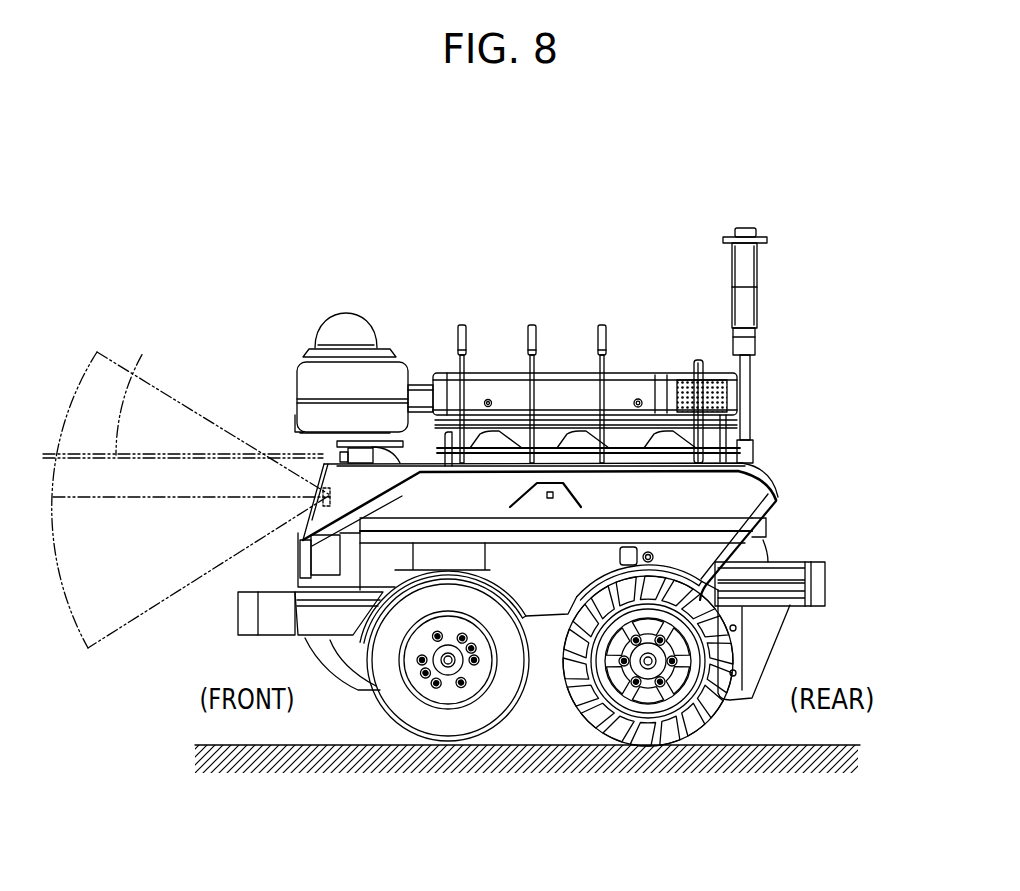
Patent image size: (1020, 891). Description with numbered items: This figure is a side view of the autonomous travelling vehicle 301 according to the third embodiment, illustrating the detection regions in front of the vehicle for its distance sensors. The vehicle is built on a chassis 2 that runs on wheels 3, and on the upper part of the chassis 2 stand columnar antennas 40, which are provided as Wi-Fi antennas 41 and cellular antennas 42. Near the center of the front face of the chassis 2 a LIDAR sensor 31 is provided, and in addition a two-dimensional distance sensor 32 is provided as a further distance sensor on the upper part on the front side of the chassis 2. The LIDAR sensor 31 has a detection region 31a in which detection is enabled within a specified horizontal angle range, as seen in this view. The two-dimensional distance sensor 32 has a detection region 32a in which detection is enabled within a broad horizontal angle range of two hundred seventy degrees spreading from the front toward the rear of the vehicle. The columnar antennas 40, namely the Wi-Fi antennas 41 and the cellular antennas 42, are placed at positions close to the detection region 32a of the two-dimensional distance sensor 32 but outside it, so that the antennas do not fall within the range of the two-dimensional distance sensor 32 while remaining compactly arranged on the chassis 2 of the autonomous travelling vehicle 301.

The chassis 2 is at (782, 492).
The wheels 3 is at (447, 737).
The LIDAR sensor 31 is at (323, 492).
The detection region 31a is at (118, 617).
The 2D distance sensor 32 is at (322, 467).
The detection region 32a is at (142, 354).
The columnar antennas 40 is at (538, 320).
The Wi-Fi antennas 41 is at (465, 315).
The cellular antennas 42 is at (697, 360).
The autonomous travelling vehicle 301 is at (786, 386).